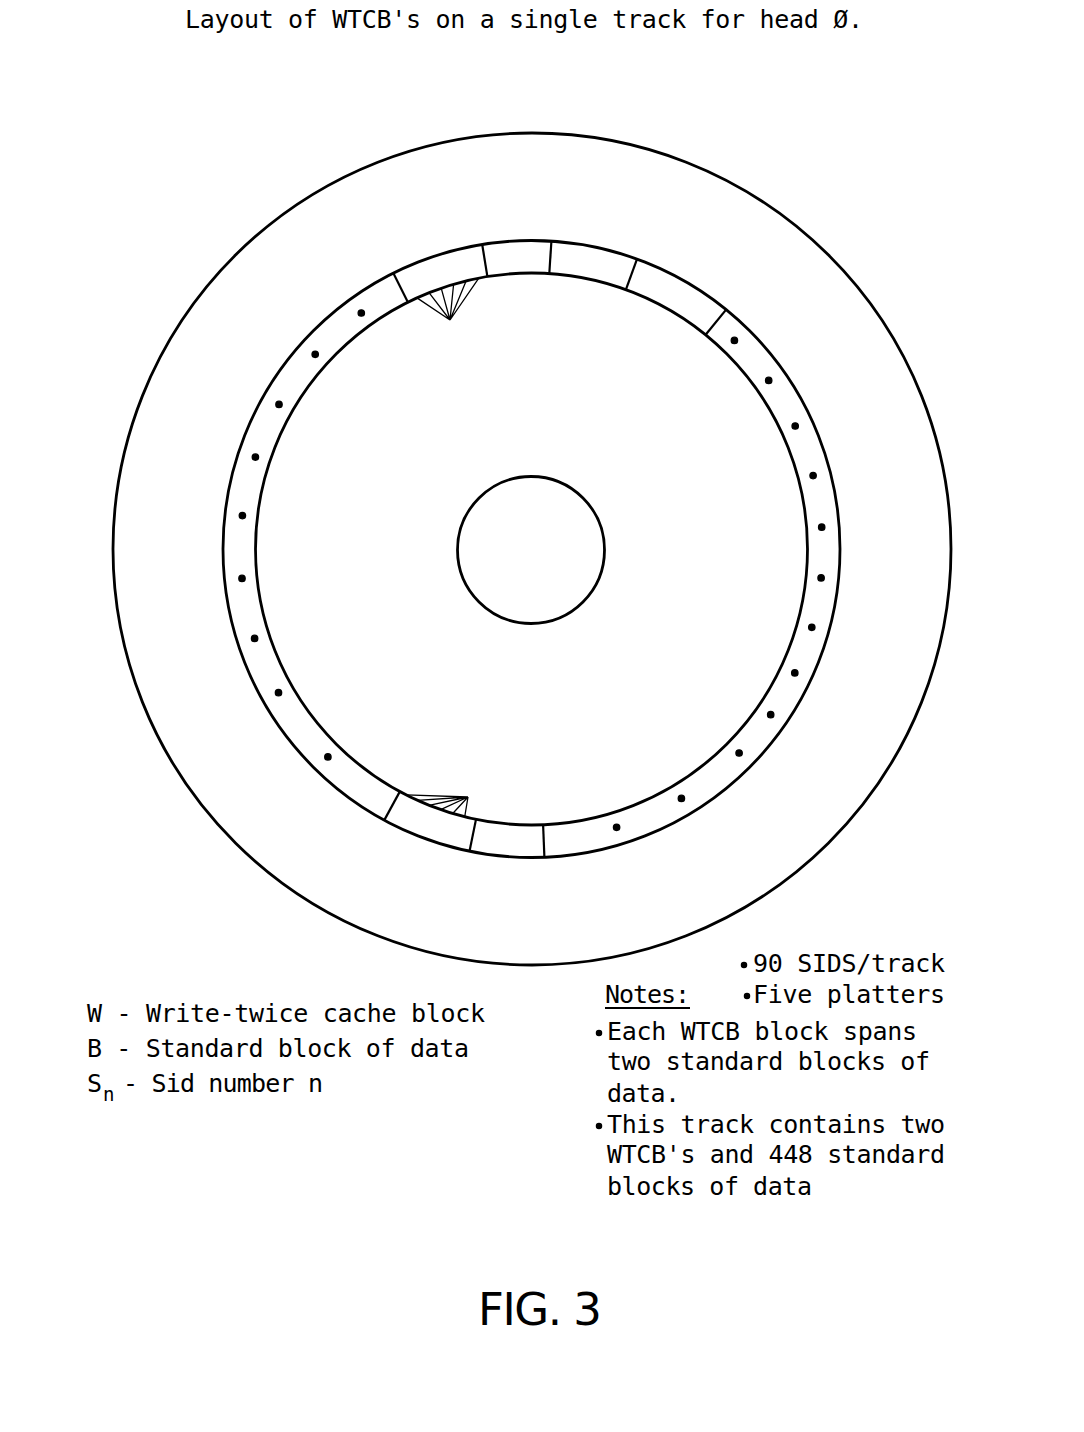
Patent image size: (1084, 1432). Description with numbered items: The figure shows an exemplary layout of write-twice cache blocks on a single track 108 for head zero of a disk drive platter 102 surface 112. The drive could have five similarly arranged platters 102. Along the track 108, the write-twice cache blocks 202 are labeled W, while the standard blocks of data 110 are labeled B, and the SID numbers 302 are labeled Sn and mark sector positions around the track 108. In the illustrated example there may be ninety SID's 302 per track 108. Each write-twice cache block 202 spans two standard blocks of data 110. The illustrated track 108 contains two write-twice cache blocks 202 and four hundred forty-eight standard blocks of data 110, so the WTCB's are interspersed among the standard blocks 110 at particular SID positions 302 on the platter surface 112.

The disk drive platter 102 is at (812, 237).
The single track 108 is at (338, 305).
The standard block of data 110 is at (449, 547).
The platter surface 112 is at (668, 188).
The write-twice cache block 202 is at (495, 277).
The SID number 302 is at (407, 237).